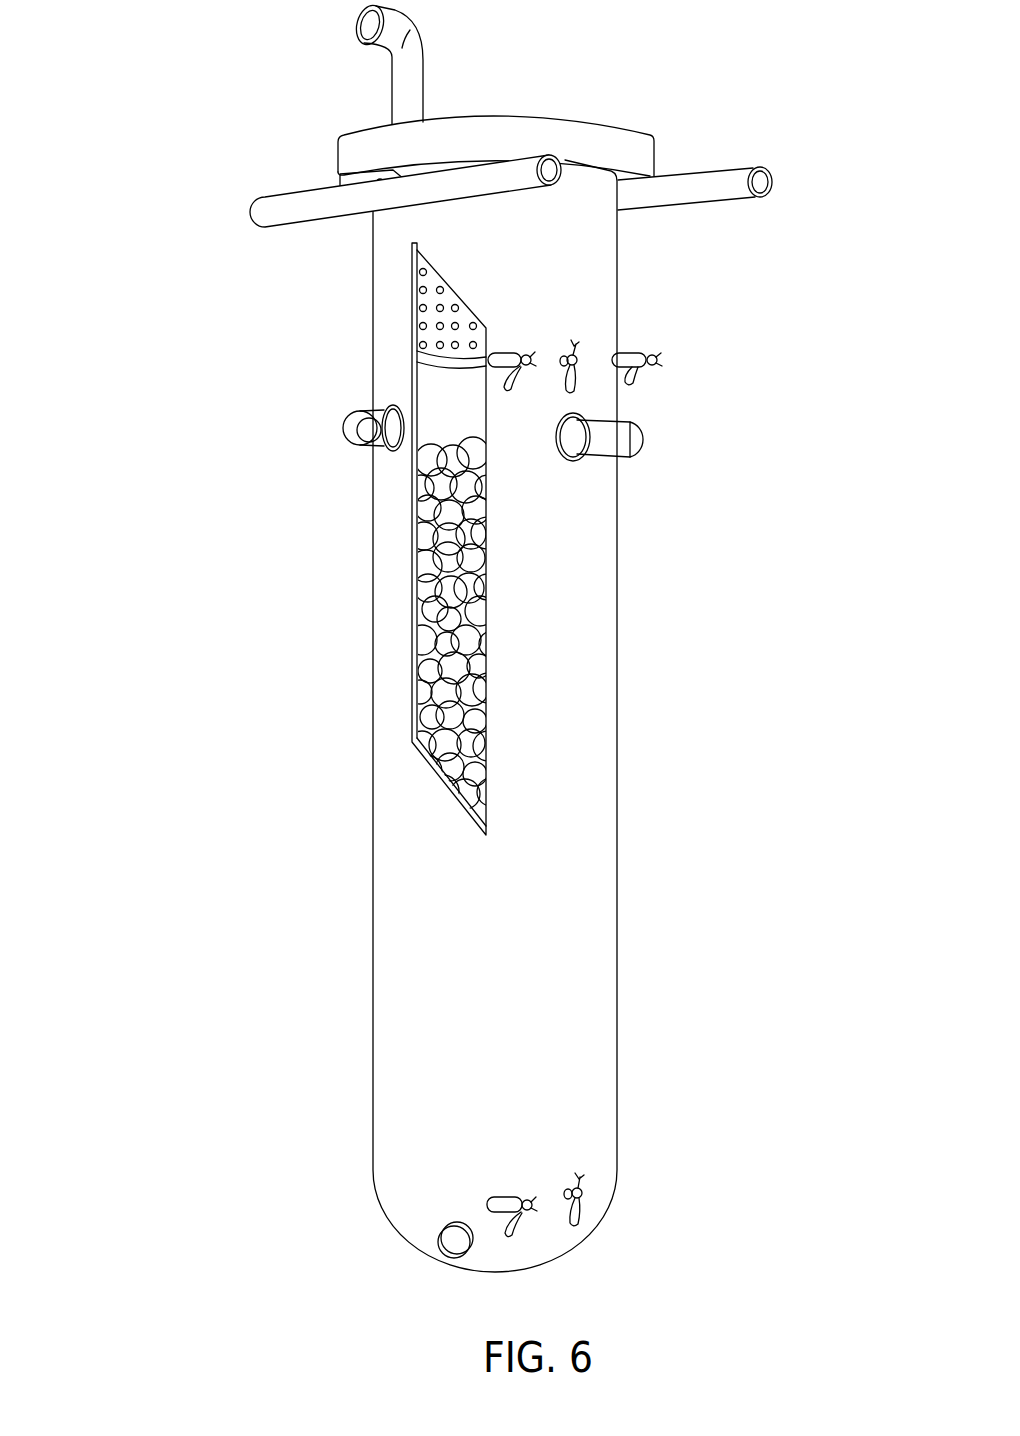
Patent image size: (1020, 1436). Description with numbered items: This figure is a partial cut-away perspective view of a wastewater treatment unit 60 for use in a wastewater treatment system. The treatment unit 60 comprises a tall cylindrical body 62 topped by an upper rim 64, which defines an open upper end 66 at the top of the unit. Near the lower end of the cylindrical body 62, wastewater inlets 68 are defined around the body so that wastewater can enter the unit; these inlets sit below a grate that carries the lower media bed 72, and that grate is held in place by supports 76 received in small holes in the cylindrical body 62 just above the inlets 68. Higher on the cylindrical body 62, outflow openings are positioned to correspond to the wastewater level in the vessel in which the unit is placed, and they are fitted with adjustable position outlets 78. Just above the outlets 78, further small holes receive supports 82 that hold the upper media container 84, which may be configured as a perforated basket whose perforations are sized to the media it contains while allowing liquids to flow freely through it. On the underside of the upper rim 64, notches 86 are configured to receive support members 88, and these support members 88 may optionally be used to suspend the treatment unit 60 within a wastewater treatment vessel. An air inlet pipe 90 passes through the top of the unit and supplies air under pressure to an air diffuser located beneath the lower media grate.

The wastewater treatment unit 60 is at (163, 540).
The cylindrical body 62 is at (612, 913).
The upper rim 64 is at (648, 145).
The open upper end 66 is at (588, 85).
The wastewater inlets 68 is at (458, 1230).
The lower media bed 72 is at (425, 632).
The supports 76 is at (582, 1193).
The adjustable position outlets 78 is at (343, 442).
The supports 82 is at (540, 369).
The upper media container 84 is at (440, 322).
The notches 86 is at (333, 175).
The support members 88 is at (258, 211).
The air inlet pipe 90 is at (425, 76).